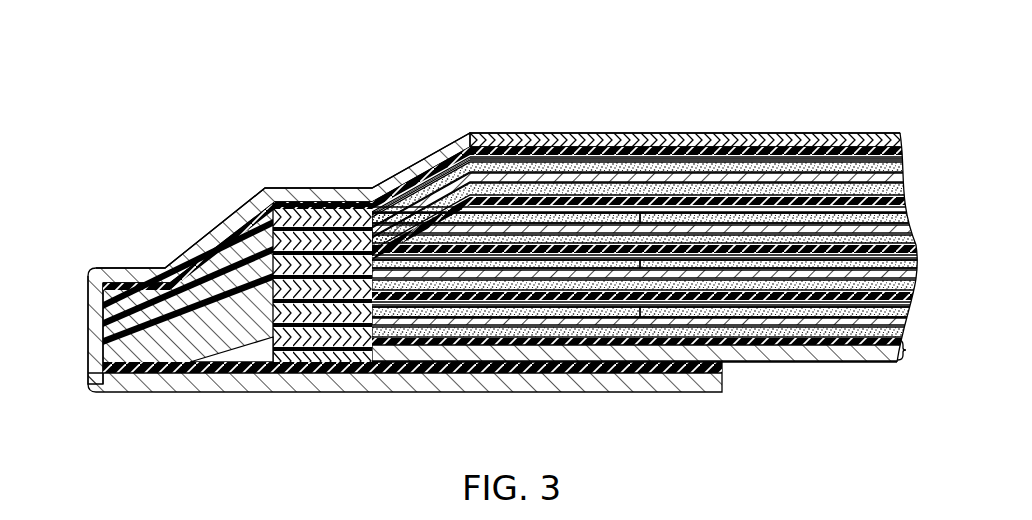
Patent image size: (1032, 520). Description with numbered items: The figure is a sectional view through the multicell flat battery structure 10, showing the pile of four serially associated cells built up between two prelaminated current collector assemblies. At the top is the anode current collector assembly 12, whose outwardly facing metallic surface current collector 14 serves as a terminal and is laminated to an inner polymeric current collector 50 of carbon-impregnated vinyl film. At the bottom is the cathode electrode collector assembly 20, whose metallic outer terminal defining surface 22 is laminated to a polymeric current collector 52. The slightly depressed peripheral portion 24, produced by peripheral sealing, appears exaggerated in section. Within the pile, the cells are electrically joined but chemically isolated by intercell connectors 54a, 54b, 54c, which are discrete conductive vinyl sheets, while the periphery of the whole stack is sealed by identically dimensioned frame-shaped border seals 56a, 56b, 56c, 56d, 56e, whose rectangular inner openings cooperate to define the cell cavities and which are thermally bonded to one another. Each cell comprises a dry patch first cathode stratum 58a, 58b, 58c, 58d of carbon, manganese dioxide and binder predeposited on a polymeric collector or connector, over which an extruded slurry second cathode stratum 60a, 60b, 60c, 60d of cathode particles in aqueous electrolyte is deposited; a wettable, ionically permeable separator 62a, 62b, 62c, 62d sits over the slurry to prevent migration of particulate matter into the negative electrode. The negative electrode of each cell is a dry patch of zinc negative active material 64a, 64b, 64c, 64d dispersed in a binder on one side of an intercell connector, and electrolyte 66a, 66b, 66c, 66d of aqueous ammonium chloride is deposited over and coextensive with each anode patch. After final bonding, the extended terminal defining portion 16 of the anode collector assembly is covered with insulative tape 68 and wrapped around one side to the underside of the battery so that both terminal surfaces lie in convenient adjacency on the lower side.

The multicell flat battery structure 10 is at (714, 90).
The anode current collector assembly 12 is at (648, 186).
The metallic surface current collector 14 is at (822, 133).
The terminal defining portion 16 is at (368, 398).
The cathode electrode collector assembly 20 is at (652, 351).
The metallic current collector outer terminal defining surface 22 is at (812, 360).
The depressed peripheral portion 24 is at (352, 163).
The polymeric current collector 50 is at (866, 150).
The polymeric current collector 52 is at (843, 348).
The intercell connector 54a is at (905, 312).
The intercell connector 54b is at (915, 264).
The intercell connector 54c is at (908, 218).
The frame-shaped border seal 56a is at (110, 363).
The frame-shaped border seal 56b is at (107, 345).
The frame-shaped border seal 56c is at (107, 328).
The frame-shaped border seal 56d is at (110, 308).
The frame-shaped border seal 56e is at (118, 297).
The first cathode stratum 58a is at (862, 345).
The first cathode stratum 58b is at (908, 296).
The first cathode stratum 58c is at (918, 249).
The first cathode stratum 58d is at (905, 201).
The second cathode stratum 60a is at (912, 352).
The second cathode stratum 60b is at (763, 350).
The second cathode stratum 60c is at (748, 228).
The second cathode stratum 60d is at (905, 178).
The separator 62a is at (905, 332).
The separator 62b is at (912, 284).
The separator 62c is at (915, 238).
The separator 62d is at (903, 165).
The zinc negative active material 64a is at (735, 350).
The zinc negative active material 64b is at (768, 345).
The zinc negative active material 64c is at (615, 208).
The zinc negative active material 64d is at (588, 160).
The electrolyte 66a is at (555, 313).
The electrolyte 66b is at (542, 263).
The electrolyte 66c is at (528, 218).
The electrolyte 66d is at (500, 165).
The insulative tape 68 is at (693, 373).